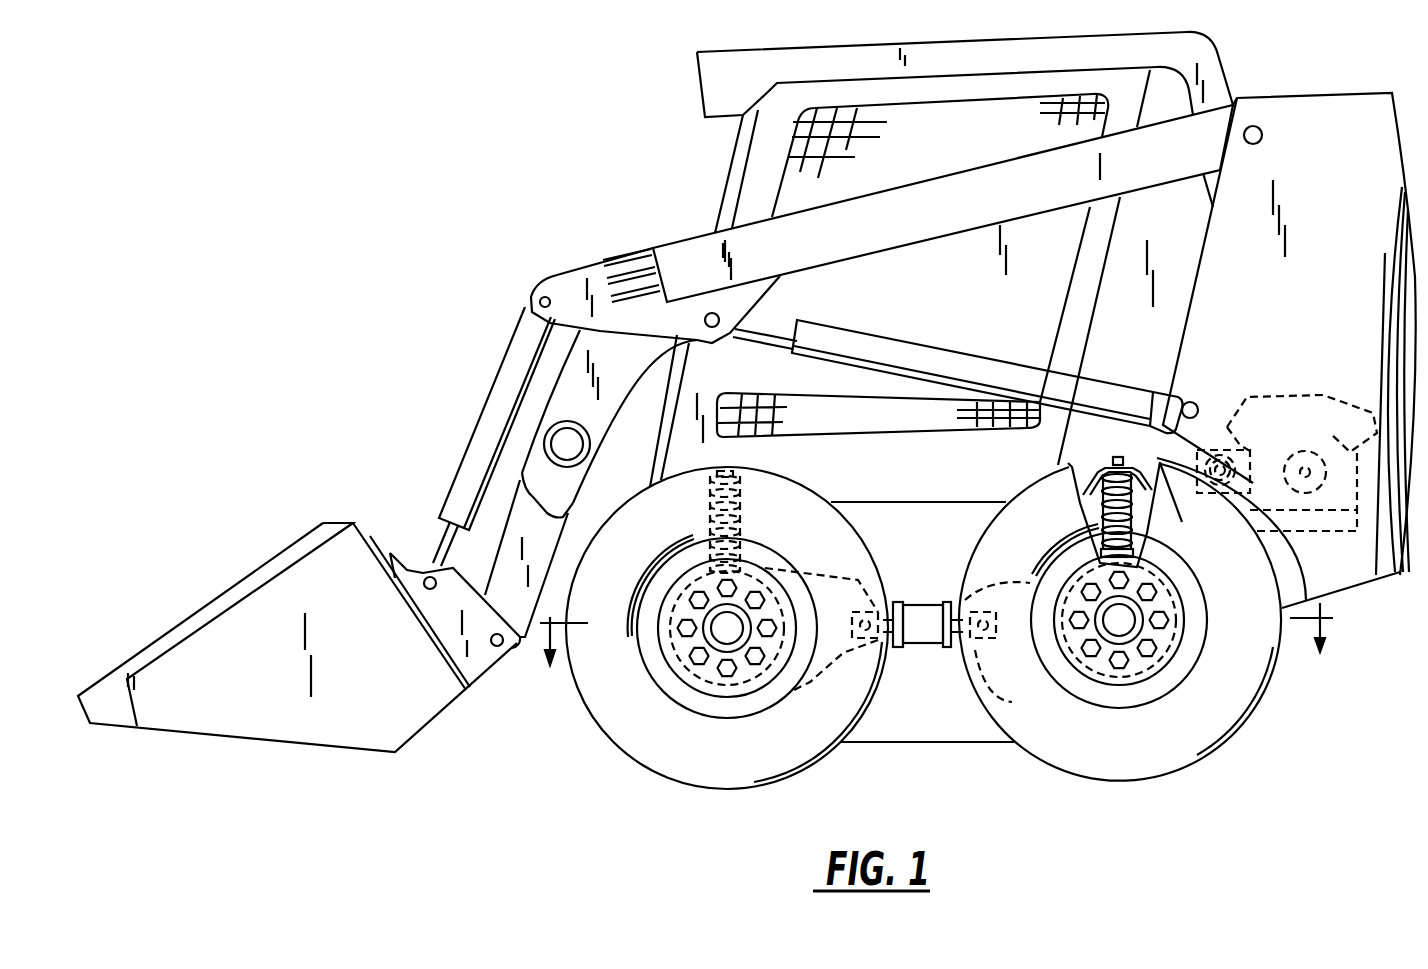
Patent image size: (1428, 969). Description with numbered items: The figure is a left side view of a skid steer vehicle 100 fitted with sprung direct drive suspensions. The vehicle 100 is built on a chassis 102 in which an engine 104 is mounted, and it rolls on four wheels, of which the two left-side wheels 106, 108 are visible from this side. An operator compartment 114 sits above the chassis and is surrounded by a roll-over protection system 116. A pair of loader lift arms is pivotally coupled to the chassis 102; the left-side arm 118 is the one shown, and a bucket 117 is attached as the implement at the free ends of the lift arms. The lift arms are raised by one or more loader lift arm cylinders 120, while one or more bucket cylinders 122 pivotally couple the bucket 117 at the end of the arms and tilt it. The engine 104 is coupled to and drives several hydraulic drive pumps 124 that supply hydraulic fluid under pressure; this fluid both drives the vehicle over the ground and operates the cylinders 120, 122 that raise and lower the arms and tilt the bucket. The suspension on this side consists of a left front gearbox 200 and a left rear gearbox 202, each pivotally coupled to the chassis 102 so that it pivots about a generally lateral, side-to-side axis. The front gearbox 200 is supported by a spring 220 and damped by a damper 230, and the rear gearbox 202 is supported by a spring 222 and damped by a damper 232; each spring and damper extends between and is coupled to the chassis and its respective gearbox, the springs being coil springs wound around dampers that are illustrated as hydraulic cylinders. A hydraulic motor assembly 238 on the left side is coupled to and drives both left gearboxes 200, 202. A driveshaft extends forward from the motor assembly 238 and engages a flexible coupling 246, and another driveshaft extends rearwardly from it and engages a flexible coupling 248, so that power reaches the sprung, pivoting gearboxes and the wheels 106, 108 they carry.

The skid steer vehicle 100 is at (535, 215).
The chassis 102 is at (918, 730).
The engine 104 is at (1267, 387).
The left front wheel 106 is at (716, 629).
The left rear wheel 108 is at (1154, 622).
The operator compartment 114 is at (975, 152).
The roll-over protection system 116 is at (757, 163).
The bucket 117 is at (277, 563).
The left-side loader lift arm 118 is at (920, 243).
The loader lift arm cylinder 120 is at (948, 350).
The bucket cylinder 122 is at (492, 392).
The hydraulic drive pumps 124 is at (1193, 493).
The left front gearbox 200 is at (730, 685).
The left rear gearbox 202 is at (1128, 700).
The spring 220 is at (740, 522).
The spring 222 is at (1066, 502).
The damper 230 is at (753, 513).
The damper 232 is at (1100, 505).
The hydraulic motor assembly 238 is at (918, 607).
The flexible coupling 246 is at (850, 668).
The flexible coupling 248 is at (1014, 650).